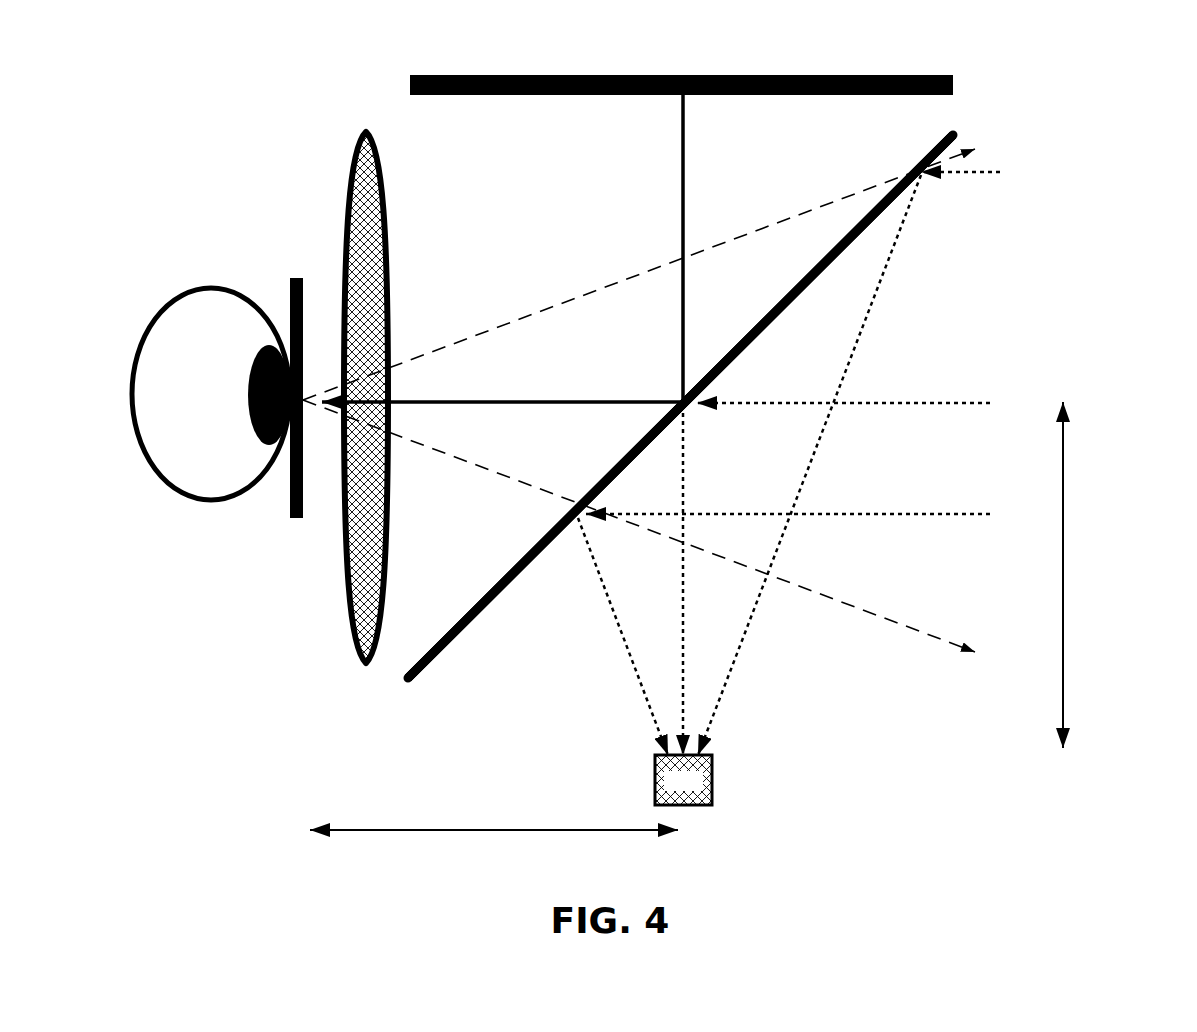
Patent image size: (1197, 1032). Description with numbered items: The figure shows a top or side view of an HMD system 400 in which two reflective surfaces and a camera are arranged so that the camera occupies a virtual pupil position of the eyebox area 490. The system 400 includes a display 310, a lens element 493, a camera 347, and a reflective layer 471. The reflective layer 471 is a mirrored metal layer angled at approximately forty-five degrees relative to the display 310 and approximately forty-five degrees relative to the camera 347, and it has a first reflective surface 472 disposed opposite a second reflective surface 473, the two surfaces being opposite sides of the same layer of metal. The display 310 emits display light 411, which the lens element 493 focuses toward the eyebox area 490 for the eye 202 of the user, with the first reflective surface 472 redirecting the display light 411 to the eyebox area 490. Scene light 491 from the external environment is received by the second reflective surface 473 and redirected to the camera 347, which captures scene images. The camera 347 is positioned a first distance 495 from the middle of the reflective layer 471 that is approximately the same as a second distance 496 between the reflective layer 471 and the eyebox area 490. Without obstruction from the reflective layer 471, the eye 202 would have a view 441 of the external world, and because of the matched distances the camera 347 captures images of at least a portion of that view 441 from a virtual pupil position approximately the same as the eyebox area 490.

The HMD system 400 is at (1109, 39).
The display 310 is at (410, 85).
The eye 202 is at (185, 283).
The eyebox area 490 is at (293, 278).
The lens element 493 is at (350, 207).
The display light 411 is at (683, 183).
The view 441 is at (578, 295).
The reflective layer 471 is at (955, 130).
The first reflective surface 472 is at (461, 608).
The second reflective surface 473 is at (486, 624).
The scene light 491 is at (810, 458).
The camera 347 is at (668, 792).
The first distance 495 is at (1110, 548).
The second distance 496 is at (493, 780).